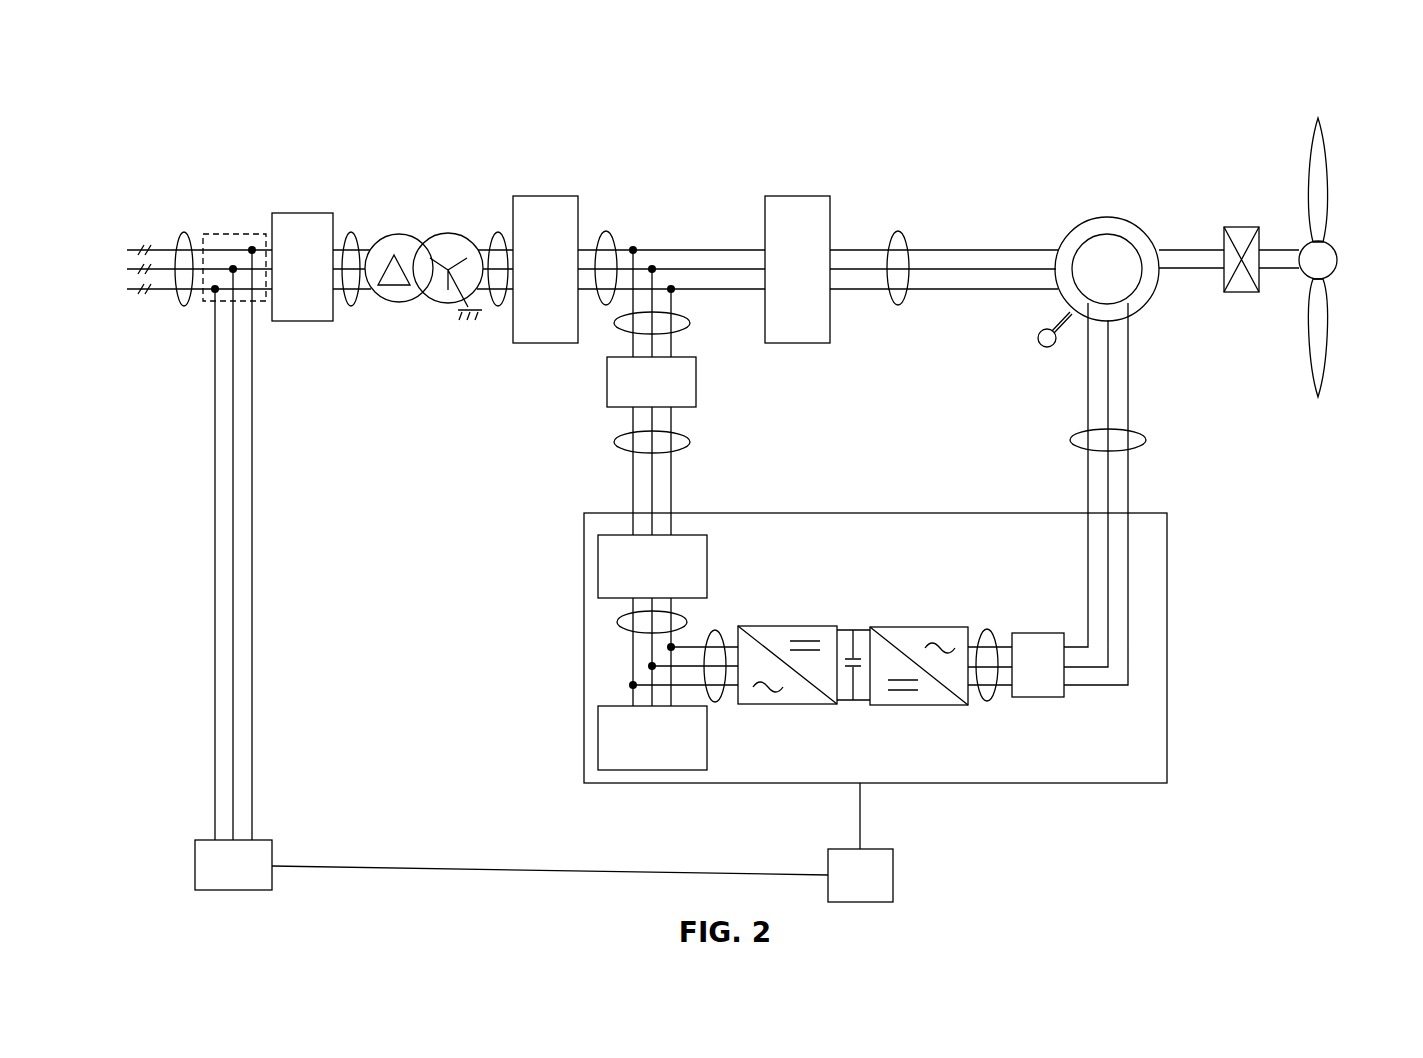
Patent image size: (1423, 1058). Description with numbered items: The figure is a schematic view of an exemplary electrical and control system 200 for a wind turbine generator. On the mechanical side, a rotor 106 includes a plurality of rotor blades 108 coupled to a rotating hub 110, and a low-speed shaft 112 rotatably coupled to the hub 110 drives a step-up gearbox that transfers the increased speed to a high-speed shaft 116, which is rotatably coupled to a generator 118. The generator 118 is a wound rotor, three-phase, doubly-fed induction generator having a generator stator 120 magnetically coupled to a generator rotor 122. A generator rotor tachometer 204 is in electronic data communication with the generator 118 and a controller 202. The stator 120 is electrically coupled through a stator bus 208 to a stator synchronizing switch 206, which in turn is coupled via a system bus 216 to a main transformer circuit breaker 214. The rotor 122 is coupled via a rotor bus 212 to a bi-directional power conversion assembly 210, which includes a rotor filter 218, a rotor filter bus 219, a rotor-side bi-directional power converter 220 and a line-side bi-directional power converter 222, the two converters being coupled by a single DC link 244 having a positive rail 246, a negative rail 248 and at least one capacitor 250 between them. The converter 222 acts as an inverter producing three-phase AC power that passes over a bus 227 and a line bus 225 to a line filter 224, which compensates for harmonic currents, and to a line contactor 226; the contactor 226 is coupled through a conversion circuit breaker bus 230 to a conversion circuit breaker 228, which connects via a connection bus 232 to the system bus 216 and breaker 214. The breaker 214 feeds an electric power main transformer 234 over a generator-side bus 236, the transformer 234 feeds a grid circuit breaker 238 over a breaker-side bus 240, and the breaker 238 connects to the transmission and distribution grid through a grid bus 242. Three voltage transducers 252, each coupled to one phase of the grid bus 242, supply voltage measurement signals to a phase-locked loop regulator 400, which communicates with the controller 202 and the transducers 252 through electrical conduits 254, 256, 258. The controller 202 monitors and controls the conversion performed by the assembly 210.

The rotor 106 is at (1333, 147).
The rotor blades 108 is at (1330, 190).
The rotating hub 110 is at (1340, 257).
The low-speed shaft 112 is at (1267, 249).
The high-speed shaft 116 is at (1195, 272).
The generator 118 is at (1117, 180).
The generator stator 120 is at (1107, 217).
The generator rotor 122 is at (1097, 248).
The electrical and control system 200 is at (236, 95).
The controller 202 is at (860, 842).
The generator rotor tachometer 204 is at (1040, 330).
The stator synchronizing switch 206 is at (798, 196).
The stator bus 208 is at (896, 233).
The bi-directional power conversion assembly 210 is at (1167, 648).
The rotor bus 212 is at (1146, 440).
The main transformer circuit breaker 214 is at (545, 196).
The system bus 216 is at (607, 232).
The rotor filter 218 is at (1039, 698).
The rotor filter bus 219 is at (990, 630).
The rotor-side bi-directional power converter 220 is at (972, 705).
The line-side bi-directional power converter 222 is at (738, 698).
The line filter 224 is at (598, 737).
The line bus 225 is at (618, 622).
The line contactor 226 is at (598, 565).
The bus 227 is at (718, 632).
The conversion circuit breaker 228 is at (697, 381).
The conversion circuit breaker bus 230 is at (690, 441).
The connection bus 232 is at (690, 323).
The electric power main transformer 234 is at (449, 233).
The generator-side bus 236 is at (500, 232).
The grid circuit breaker 238 is at (303, 213).
The breaker-side bus 240 is at (350, 232).
The grid bus 242 is at (186, 232).
The DC link 244 is at (837, 577).
The positive rail 246 is at (870, 628).
The negative rail 248 is at (860, 706).
The capacitor 250 is at (846, 660).
The voltage transducers 252 is at (202, 313).
The electrical conduit 254 is at (251, 612).
The electrical conduit 256 is at (233, 575).
The electrical conduit 258 is at (215, 545).
The phase-locked loop regulator 400 is at (195, 865).